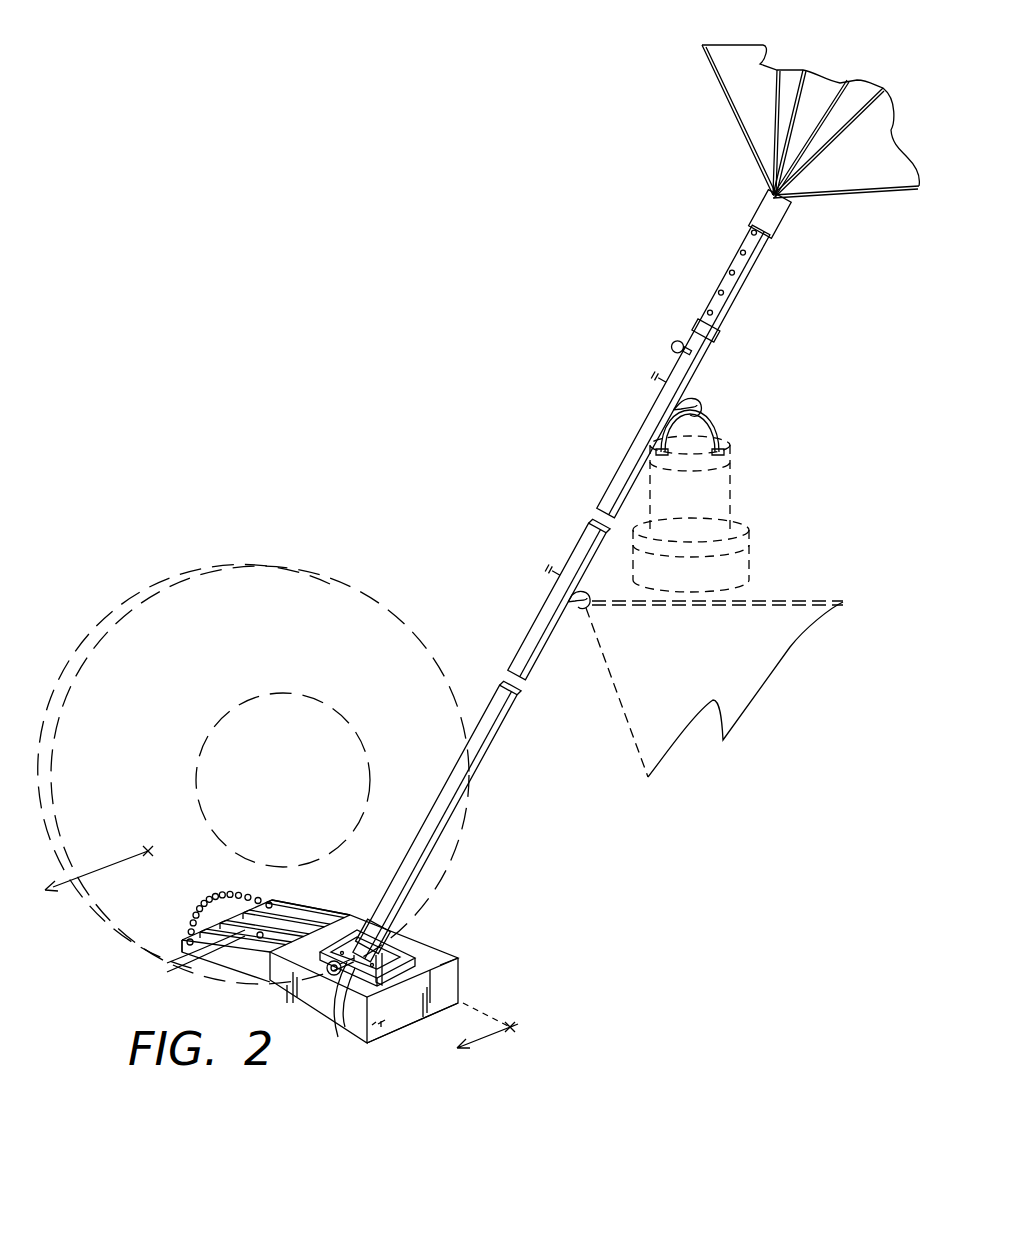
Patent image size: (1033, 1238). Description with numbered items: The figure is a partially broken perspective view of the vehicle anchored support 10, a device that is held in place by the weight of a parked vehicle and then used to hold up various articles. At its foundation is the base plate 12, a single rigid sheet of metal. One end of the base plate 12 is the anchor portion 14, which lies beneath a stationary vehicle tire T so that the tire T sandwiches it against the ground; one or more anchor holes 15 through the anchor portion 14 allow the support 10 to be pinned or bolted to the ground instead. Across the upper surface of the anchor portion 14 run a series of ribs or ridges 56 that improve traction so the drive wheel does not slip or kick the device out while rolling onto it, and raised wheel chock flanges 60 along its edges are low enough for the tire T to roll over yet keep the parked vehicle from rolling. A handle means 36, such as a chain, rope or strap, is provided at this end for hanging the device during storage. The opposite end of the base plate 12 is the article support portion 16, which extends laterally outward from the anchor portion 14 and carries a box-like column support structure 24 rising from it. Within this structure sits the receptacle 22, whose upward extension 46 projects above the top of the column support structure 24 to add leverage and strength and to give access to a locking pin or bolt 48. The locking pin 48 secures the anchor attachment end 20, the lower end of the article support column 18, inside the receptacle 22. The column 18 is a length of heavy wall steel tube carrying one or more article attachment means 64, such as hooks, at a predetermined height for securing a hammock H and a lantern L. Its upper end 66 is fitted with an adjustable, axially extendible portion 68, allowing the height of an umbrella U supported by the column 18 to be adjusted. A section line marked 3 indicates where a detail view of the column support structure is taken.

The vehicle anchored support 10 is at (506, 927).
The base plate 12 is at (258, 993).
The anchor portion 14 is at (288, 905).
The anchor hole 15 is at (264, 935).
The article support portion 16 is at (383, 1040).
The article support column 18 is at (460, 773).
The anchor attachment end 20 is at (366, 940).
The receptacle 22 is at (383, 950).
The column support structure 24 is at (457, 973).
The handle means 36 is at (220, 896).
The upward extension 46 is at (342, 1016).
The locking pin or bolt 48 is at (350, 972).
The ribs or ridges 56 is at (168, 966).
The wheel chock flanges 60 is at (187, 940).
The article attachment means 64 is at (705, 402).
The upper end 66 is at (694, 332).
The axially extendible portion 68 is at (740, 262).
The section line 3- 3 is at (296, 935).
The umbrella U is at (722, 110).
The lantern L is at (742, 487).
The hammock H is at (627, 693).
The vehicle tire T is at (232, 565).